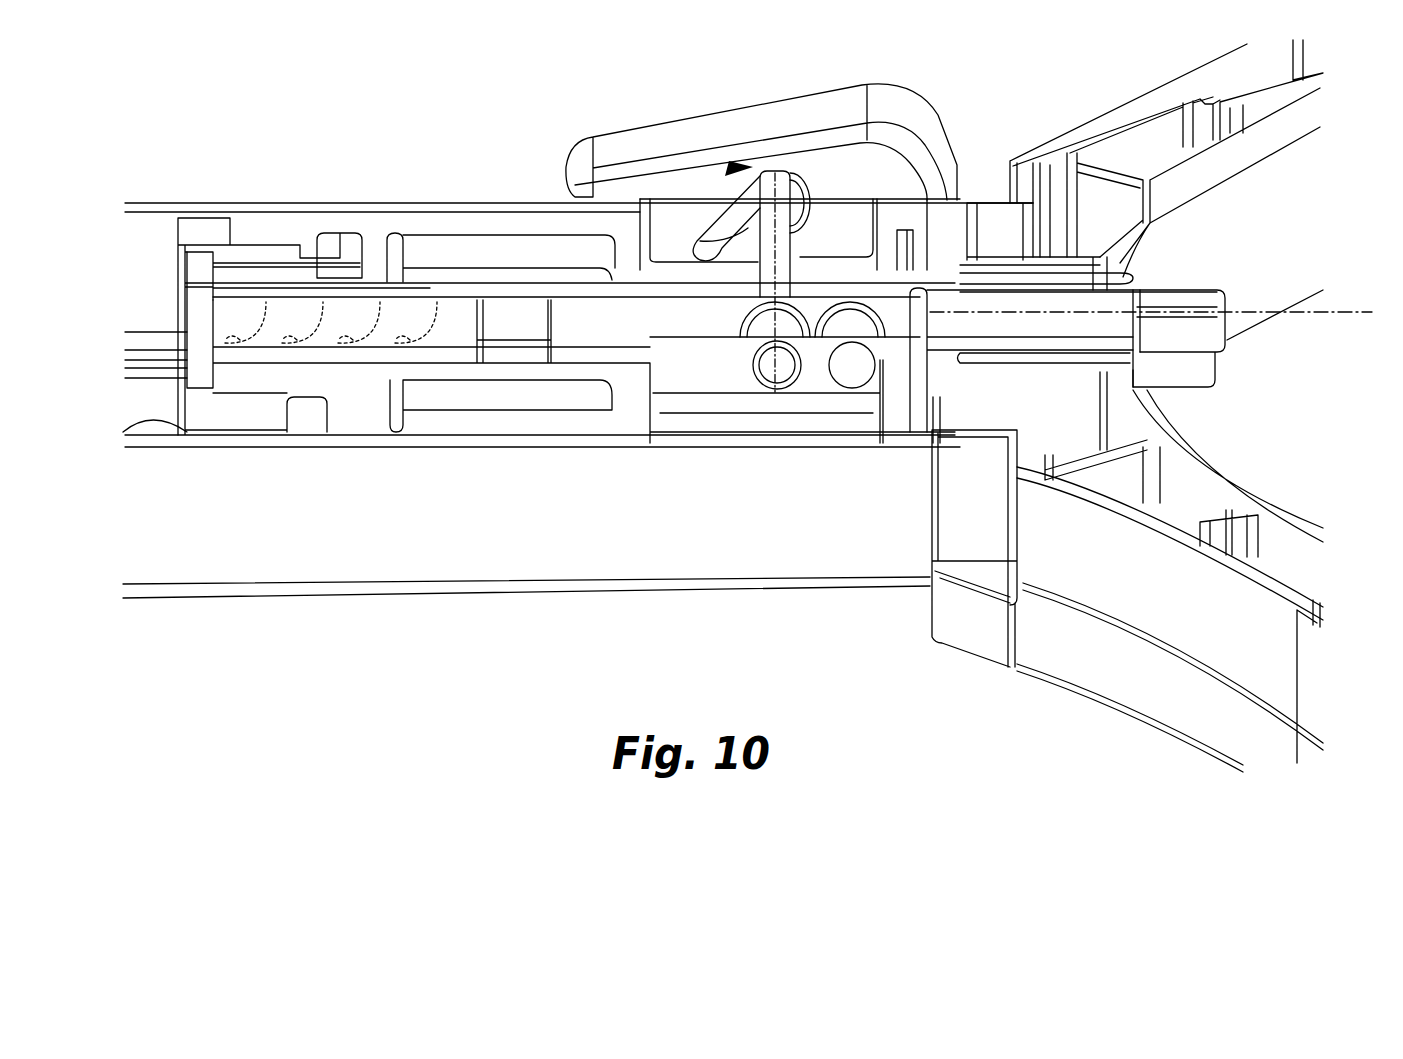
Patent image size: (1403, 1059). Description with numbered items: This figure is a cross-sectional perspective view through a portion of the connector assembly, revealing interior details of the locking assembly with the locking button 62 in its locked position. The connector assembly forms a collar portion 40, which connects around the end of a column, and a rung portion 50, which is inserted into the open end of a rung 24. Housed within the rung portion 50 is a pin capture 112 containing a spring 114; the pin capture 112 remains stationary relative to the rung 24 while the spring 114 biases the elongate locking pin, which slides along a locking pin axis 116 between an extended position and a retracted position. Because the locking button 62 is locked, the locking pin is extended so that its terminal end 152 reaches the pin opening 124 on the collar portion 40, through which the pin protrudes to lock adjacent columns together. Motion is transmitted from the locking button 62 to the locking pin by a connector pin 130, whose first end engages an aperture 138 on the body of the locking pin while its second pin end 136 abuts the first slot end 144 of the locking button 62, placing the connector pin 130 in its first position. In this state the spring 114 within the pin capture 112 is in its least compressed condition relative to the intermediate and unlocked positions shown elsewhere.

The rung 24 is at (372, 585).
The collar portion 40 is at (1213, 63).
The rung portion 50 is at (207, 230).
The locking button 62 is at (750, 97).
The pin capture 112 is at (391, 283).
The spring 114 is at (260, 340).
The locking pin axis 116 is at (1367, 313).
The pin opening 124 is at (1133, 283).
The connector pin 130 is at (793, 230).
The second pin end 136 is at (727, 170).
The aperture 138 is at (750, 370).
The first slot end 144 is at (814, 172).
The terminal end 152 is at (1217, 297).